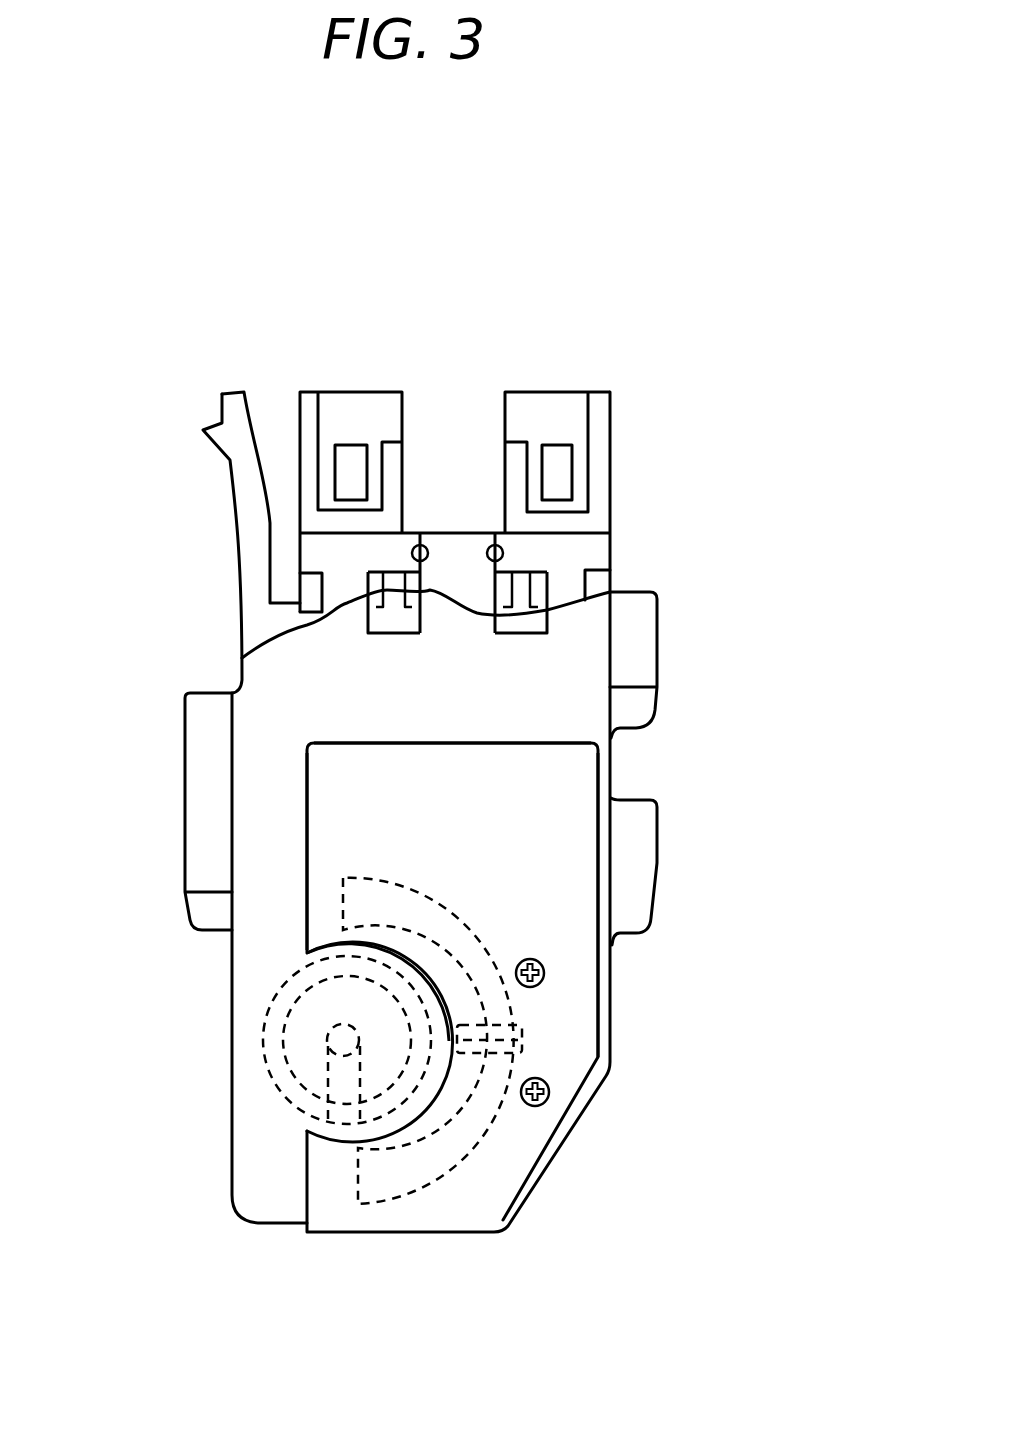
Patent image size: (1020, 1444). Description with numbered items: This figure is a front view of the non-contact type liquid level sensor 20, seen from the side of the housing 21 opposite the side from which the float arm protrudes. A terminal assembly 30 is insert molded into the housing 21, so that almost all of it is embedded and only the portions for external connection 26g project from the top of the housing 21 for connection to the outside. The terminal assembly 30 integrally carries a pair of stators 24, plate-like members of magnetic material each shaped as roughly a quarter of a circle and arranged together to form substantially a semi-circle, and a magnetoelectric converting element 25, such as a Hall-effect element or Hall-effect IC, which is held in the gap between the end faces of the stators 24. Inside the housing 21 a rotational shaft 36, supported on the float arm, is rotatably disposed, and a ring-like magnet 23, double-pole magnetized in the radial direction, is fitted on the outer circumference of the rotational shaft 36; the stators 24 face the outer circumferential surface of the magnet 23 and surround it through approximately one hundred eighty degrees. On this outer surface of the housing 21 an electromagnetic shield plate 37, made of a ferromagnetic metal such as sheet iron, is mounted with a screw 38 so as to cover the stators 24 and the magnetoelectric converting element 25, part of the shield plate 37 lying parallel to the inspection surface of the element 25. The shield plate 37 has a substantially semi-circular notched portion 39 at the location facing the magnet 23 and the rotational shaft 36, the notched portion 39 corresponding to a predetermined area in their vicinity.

The non-contact type liquid level sensor 20 is at (681, 243).
The housing 21 is at (622, 450).
The portions for external connection 26g is at (332, 563).
The terminal assembly 30 is at (431, 515).
The electromagnetic shield plate 37 is at (592, 770).
The screw 38 is at (550, 1092).
The notched portion 39 is at (337, 943).
The magnet 23 is at (262, 1069).
The rotational shaft 36 is at (300, 1087).
The stators 24 is at (433, 1183).
The magnetoelectric converting element 25 is at (490, 1080).